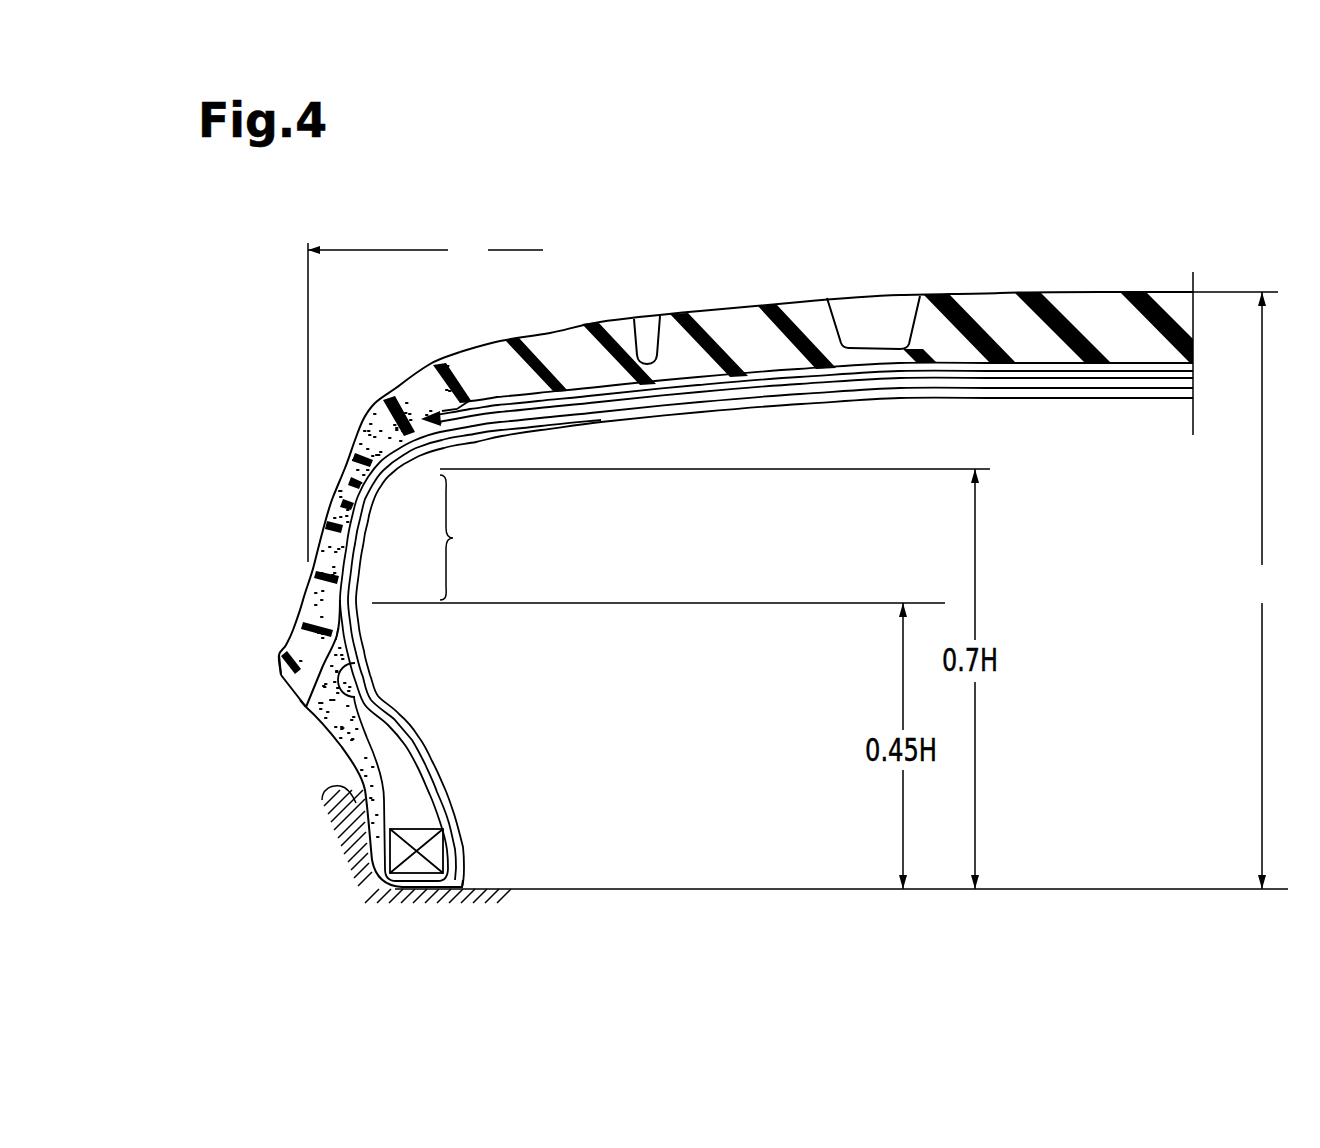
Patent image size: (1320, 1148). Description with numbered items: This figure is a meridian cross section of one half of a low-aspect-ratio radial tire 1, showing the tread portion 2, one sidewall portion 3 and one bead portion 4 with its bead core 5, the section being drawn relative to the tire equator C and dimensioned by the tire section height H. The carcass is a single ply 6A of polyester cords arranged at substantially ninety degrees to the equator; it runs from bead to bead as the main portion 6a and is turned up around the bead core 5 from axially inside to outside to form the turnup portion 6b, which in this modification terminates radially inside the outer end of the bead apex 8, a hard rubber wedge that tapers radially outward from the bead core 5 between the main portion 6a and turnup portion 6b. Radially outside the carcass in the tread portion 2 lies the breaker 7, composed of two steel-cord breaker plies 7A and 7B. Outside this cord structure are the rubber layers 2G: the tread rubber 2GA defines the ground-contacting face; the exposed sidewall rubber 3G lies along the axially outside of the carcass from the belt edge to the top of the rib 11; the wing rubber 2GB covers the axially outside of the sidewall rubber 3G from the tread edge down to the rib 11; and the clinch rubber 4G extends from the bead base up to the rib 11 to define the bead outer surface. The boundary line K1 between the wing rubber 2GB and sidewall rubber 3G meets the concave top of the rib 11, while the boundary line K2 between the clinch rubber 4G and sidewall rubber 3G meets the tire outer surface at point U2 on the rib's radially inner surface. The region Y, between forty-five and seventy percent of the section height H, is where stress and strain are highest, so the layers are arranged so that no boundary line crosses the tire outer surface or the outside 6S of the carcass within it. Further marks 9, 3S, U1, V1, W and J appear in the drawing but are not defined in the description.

The radial tire 1 is at (683, 564).
The tread portion 2 is at (788, 307).
The sidewall portion 3 is at (317, 559).
The bead portion 4 is at (390, 807).
The bead core 5 is at (416, 897).
The carcass ply 6A is at (765, 634).
The main portion 6a is at (766, 634).
The turnup portion 6b is at (474, 650).
The outside of the carcass 6S is at (416, 670).
The breaker 7 is at (807, 447).
The breaker ply 7A is at (807, 451).
The breaker ply 7B is at (817, 422).
The bead apex 8 is at (774, 642).
The tread rubber 9 is at (1030, 283).
The rib 11 is at (237, 618).
The rubber layer G 2G is at (322, 486).
The tread rubber 2GA is at (321, 488).
The wing rubber 2GB is at (380, 482).
The sidewall outer surface 3S is at (336, 513).
The sidewall rubber 3G is at (240, 710).
The clinch rubber 4G is at (354, 797).
The boundary line K1 is at (277, 423).
The boundary line K2 is at (318, 742).
The outer corner point U1 is at (229, 667).
The intersection point U2 is at (268, 733).
The junction point V1 is at (281, 579).
The width W is at (425, 397).
The tire section height H is at (1235, 590).
The region Y is at (458, 537).
The tire equator C is at (1197, 277).
The rim J is at (510, 898).